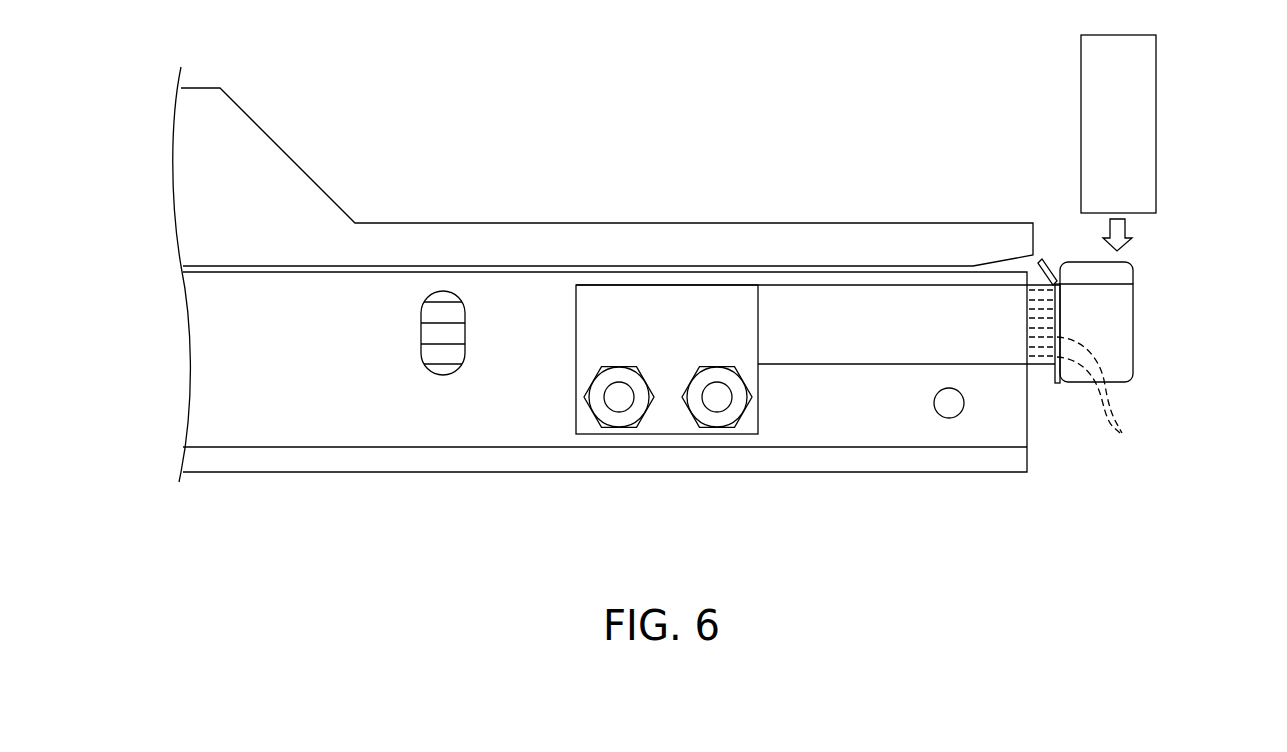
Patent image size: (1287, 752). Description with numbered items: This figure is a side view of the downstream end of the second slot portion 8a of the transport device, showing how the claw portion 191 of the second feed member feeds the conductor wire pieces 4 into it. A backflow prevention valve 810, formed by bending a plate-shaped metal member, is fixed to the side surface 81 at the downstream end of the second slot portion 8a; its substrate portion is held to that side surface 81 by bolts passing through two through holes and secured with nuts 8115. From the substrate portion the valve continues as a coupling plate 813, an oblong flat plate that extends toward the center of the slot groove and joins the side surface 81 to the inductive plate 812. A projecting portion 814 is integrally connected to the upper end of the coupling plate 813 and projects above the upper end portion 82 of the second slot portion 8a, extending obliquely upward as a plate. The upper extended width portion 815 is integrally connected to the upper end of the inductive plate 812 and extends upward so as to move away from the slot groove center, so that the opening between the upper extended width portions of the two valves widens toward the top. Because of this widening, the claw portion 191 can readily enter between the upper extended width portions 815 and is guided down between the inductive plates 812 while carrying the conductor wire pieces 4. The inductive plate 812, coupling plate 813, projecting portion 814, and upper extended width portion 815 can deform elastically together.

The second slot portion 8a is at (553, 256).
The upper end portion 82 is at (870, 265).
The side surface 81 is at (868, 428).
The nuts 8115 is at (612, 418).
The backflow prevention valve 810 is at (1125, 321).
The inductive plate 812 is at (1117, 355).
The coupling plate 813 is at (1040, 363).
The projecting portion 814 is at (1053, 262).
The upper extended width portion 815 is at (1117, 272).
The claw portion 191 is at (1156, 70).
The conductor wire pieces 4 is at (1098, 396).